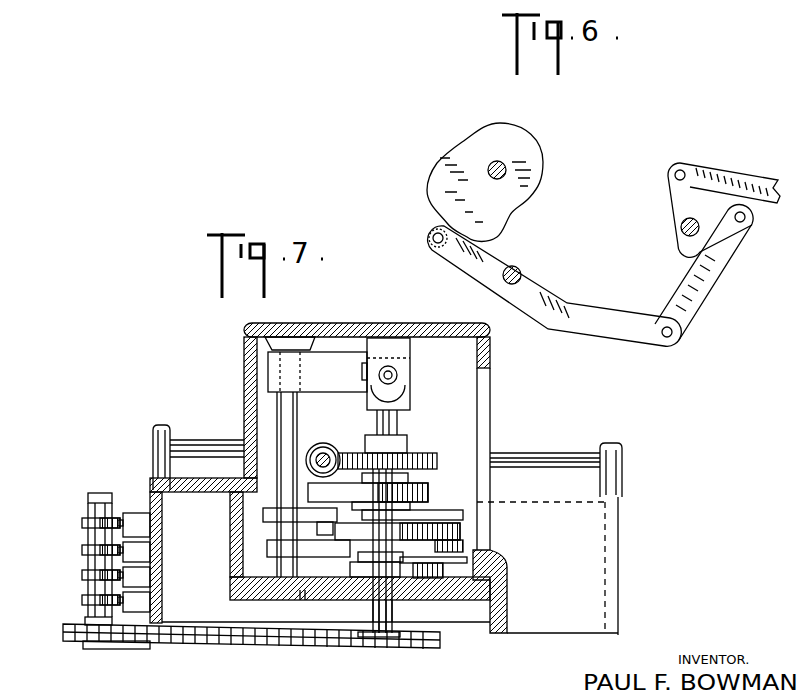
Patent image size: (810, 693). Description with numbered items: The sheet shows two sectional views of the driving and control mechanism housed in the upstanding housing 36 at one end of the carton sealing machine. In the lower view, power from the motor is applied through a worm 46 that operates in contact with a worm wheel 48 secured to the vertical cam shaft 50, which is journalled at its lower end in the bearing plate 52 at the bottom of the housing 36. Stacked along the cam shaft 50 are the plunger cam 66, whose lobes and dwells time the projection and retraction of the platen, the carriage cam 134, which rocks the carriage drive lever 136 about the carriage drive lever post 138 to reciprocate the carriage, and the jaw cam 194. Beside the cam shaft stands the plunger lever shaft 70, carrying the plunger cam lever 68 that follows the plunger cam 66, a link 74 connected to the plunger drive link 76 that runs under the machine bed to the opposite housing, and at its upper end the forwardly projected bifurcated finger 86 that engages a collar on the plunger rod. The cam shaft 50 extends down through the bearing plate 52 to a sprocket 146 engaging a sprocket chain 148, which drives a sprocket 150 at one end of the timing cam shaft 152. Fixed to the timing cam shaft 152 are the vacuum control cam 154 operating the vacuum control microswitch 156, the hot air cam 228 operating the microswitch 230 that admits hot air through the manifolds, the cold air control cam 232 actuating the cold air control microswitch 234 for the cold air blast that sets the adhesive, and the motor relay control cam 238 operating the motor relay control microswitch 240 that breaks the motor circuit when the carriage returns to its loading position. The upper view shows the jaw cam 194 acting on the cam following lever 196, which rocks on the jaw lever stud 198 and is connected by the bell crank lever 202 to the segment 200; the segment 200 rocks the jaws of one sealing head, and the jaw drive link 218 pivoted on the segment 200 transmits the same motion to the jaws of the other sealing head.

In FIG. 7, the housing 36 is at (312, 328).
In FIG. 7, the worm 46 is at (325, 447).
In FIG. 7, the worm wheel 48 is at (437, 462).
In FIG. 6, the cam shaft 50 is at (492, 163).
In FIG. 7, the cam shaft 50 is at (394, 618).
In FIG. 7, the bearing plate 52 is at (318, 578).
In FIG. 7, the plunger cam 66 is at (462, 532).
In FIG. 7, the plunger cam lever 68 is at (272, 512).
In FIG. 7, the plunger lever shaft 70 is at (303, 407).
In FIG. 7, the link 74 is at (318, 548).
In FIG. 7, the plunger drive link 76 is at (305, 600).
In FIG. 7, the bifurcated finger 86 is at (338, 362).
In FIG. 7, the carriage cam 134 is at (428, 495).
In FIG. 7, the carriage drive lever 136 is at (464, 514).
In FIG. 7, the carriage drive lever post 138 is at (464, 548).
In FIG. 7, the sprocket 146 is at (418, 637).
In FIG. 7, the sprocket chain 148 is at (198, 645).
In FIG. 7, the sprocket 150 is at (72, 630).
In FIG. 7, the timing cam shaft 152 is at (94, 505).
In FIG. 7, the vacuum control cam 154 is at (82, 575).
In FIG. 7, the vacuum control microswitch 156 is at (152, 578).
In FIG. 6, the jaw cam 194 is at (502, 135).
In FIG. 7, the jaw cam 194 is at (393, 600).
In FIG. 6, the cam following lever 196 is at (591, 318).
In FIG. 7, the cam following lever 196 is at (468, 561).
In FIG. 6, the jaw lever stud 198 is at (518, 267).
In FIG. 6, the segment 200 is at (672, 208).
In FIG. 6, the bell crank lever 202 is at (712, 278).
In FIG. 6, the jaw drive link 218 is at (751, 178).
In FIG. 7, the hot air cam 228 is at (82, 523).
In FIG. 7, the microswitch 230 is at (150, 520).
In FIG. 7, the cold air control cam 232 is at (82, 550).
In FIG. 7, the cold air control microswitch 234 is at (150, 552).
In FIG. 7, the motor relay control cam 238 is at (82, 600).
In FIG. 7, the motor relay control microswitch 240 is at (150, 602).